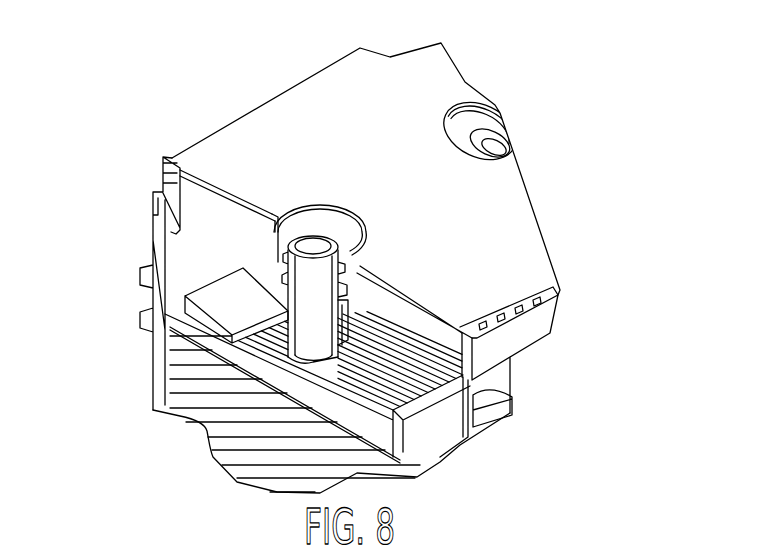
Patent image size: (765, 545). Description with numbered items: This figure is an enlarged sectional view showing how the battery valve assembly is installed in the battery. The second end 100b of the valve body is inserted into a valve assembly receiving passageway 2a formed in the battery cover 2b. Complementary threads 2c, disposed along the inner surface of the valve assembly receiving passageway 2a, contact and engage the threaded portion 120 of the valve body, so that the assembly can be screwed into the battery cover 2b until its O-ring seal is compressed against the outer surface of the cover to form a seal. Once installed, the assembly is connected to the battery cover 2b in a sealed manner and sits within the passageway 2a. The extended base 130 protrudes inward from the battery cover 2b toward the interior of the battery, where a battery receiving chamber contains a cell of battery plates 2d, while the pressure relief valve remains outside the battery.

The valve assembly receiving passageway 2a is at (315, 228).
The battery cover 2b is at (287, 107).
The complementary threads 2c is at (377, 332).
The cell of battery plates 2d is at (255, 428).
The threaded portion 120 is at (288, 265).
The extended base 130 is at (350, 297).
The second end 100b is at (296, 345).